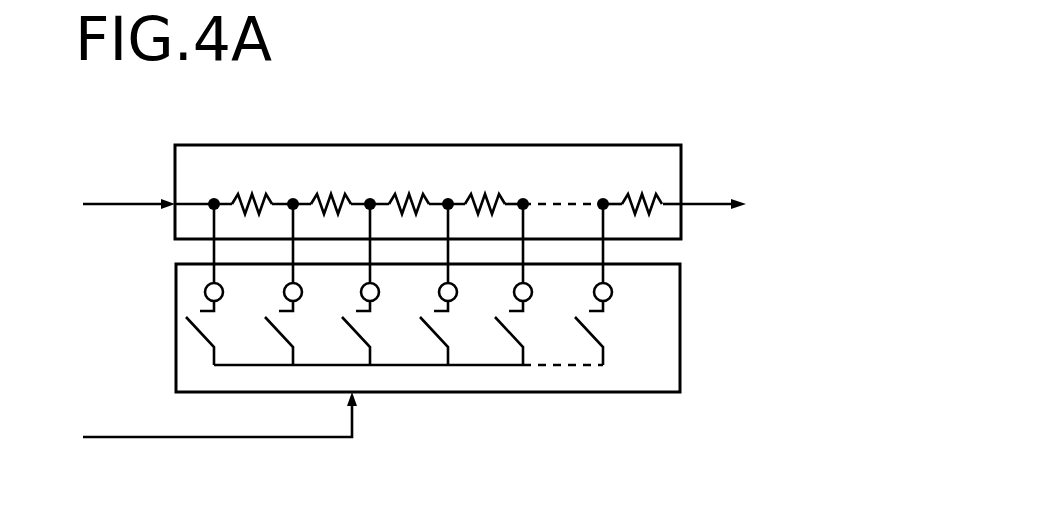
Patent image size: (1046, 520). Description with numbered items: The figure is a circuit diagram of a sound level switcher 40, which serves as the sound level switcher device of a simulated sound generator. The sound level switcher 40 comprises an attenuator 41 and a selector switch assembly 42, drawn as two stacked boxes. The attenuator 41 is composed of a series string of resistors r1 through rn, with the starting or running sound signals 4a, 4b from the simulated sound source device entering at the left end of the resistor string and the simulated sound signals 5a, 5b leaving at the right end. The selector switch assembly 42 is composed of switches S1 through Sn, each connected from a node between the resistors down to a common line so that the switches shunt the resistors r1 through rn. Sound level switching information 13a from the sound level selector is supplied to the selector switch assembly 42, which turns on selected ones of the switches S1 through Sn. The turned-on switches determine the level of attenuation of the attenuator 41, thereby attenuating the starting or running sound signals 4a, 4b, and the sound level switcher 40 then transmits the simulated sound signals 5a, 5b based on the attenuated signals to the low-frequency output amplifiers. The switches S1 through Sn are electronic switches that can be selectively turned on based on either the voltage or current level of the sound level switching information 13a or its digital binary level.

The sound level switcher 40 is at (347, 108).
The attenuator 41 is at (497, 145).
The selector switch assembly 42 is at (528, 393).
The starting sound signal 4a is at (115, 203).
The running sound signal 4b is at (129, 204).
The simulated sound signal 5a is at (716, 200).
The simulated sound signal 5b is at (713, 204).
The sound level switching information 13a is at (118, 437).
The resistor r1 is at (268, 203).
The resistor rn is at (622, 196).
The switch S1 is at (195, 336).
The switch Sn is at (606, 339).